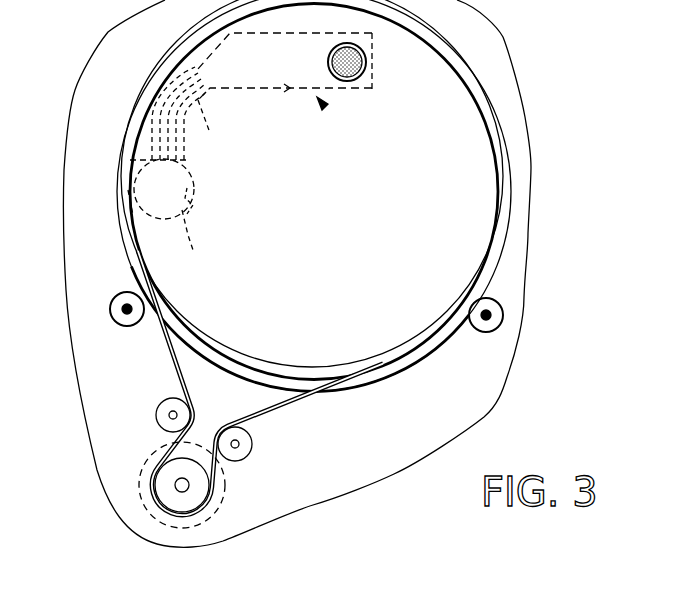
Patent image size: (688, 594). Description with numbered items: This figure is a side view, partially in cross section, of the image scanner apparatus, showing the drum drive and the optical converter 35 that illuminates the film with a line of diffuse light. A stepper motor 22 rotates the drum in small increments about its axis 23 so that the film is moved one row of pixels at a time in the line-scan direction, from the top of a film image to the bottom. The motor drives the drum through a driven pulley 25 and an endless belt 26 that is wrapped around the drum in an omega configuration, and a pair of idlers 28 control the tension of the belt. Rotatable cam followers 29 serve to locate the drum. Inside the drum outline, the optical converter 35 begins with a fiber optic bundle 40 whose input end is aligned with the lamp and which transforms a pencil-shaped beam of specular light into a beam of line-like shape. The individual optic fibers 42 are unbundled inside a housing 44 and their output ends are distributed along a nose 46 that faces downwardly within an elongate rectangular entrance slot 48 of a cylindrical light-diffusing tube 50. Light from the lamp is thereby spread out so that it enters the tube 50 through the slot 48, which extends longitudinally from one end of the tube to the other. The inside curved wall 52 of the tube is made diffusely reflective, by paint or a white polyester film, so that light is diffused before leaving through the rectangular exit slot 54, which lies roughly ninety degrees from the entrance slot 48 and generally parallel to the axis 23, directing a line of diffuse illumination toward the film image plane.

The stepper motor 22 is at (140, 477).
The axis 23 is at (309, 190).
The driven pulley 25 is at (168, 494).
The endless belt 26 is at (177, 374).
The idlers 28 is at (167, 412).
The cam followers 29 is at (120, 296).
The optical converter 35 is at (324, 106).
The fiber optic bundle 40 is at (366, 70).
The optic fibers 42 is at (361, 84).
The housing 44 is at (289, 95).
The nose 46 is at (193, 163).
The entrance slot 48 is at (133, 158).
The light-diffusing tube 50 is at (201, 244).
The inside curved wall 52 is at (195, 207).
The exit slot 54 is at (128, 190).